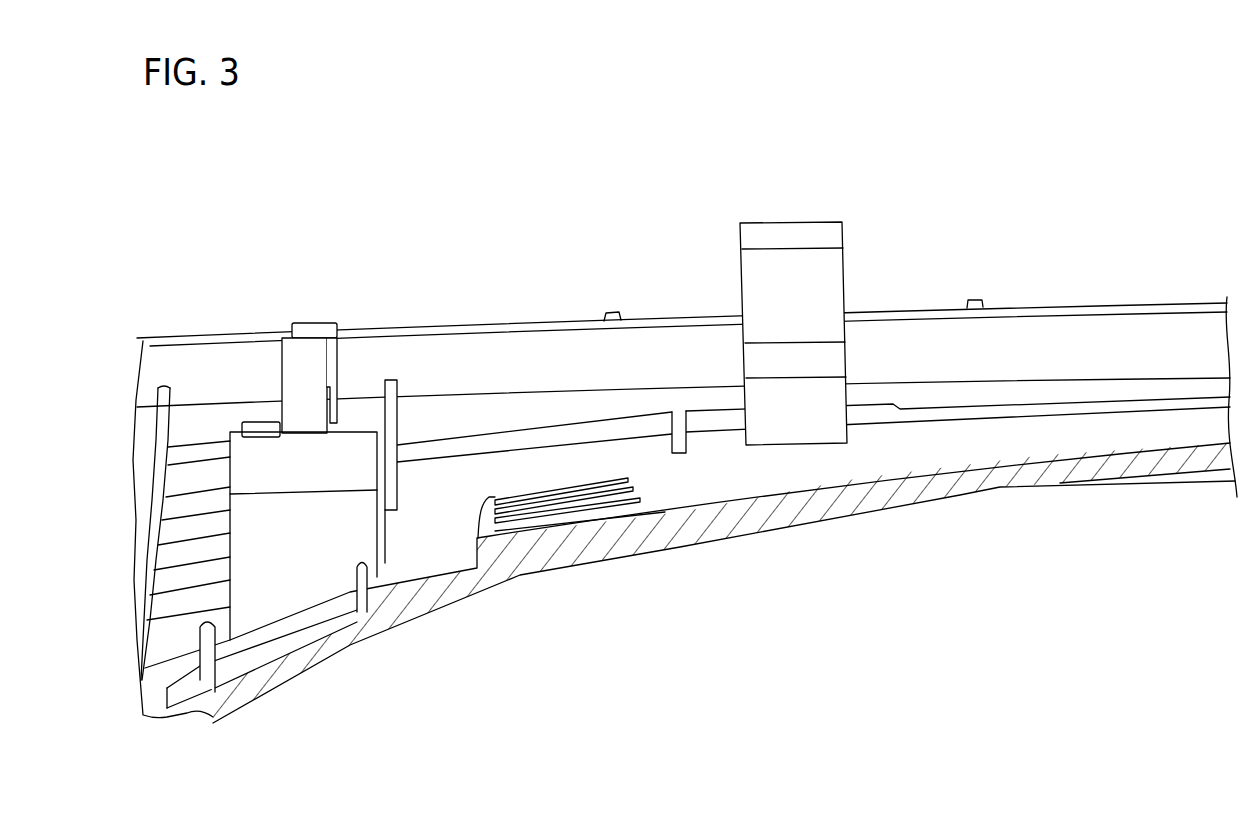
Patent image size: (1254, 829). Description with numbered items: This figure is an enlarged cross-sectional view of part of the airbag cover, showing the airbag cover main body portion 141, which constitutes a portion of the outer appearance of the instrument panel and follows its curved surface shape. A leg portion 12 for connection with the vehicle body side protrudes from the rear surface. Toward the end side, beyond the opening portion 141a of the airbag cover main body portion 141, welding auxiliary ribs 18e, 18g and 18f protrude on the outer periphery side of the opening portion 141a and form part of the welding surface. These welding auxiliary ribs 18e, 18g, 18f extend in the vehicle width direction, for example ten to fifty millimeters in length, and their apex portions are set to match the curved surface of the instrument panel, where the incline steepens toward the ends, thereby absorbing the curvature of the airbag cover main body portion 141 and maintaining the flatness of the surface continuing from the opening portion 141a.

The leg portion 12 is at (805, 232).
The airbag cover main body portion 141 is at (1085, 273).
The opening portion 141a is at (1012, 437).
The welding auxiliary rib 18e is at (505, 510).
The welding auxiliary rib 18g is at (540, 497).
The welding auxiliary rib 18f is at (575, 493).